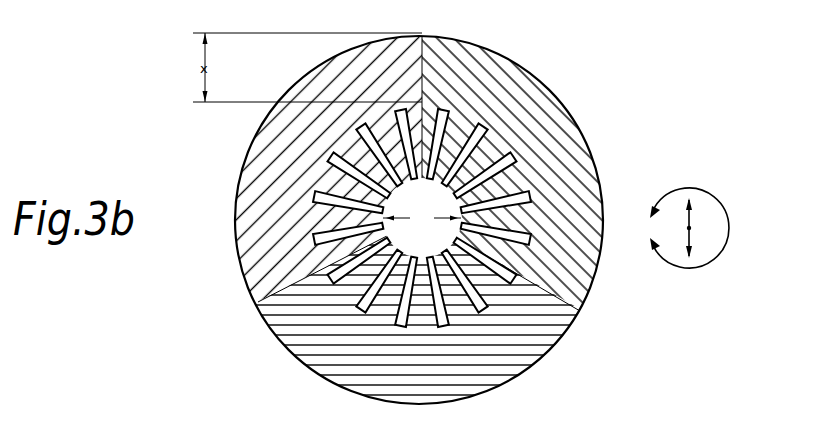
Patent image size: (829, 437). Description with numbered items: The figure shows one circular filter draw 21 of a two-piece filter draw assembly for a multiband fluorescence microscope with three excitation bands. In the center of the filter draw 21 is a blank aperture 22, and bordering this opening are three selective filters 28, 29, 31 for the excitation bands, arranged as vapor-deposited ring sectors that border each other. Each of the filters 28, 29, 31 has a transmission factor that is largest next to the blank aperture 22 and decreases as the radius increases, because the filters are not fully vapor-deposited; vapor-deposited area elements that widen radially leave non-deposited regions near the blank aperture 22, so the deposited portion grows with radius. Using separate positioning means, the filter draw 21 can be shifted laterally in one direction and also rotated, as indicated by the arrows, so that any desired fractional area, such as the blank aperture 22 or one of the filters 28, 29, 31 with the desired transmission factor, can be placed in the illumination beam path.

The circular filter draw 21 is at (597, 101).
The blank aperture 22 is at (410, 240).
The selective filter 28 is at (257, 262).
The selective filter 29 is at (583, 177).
The selective filter 31 is at (528, 340).